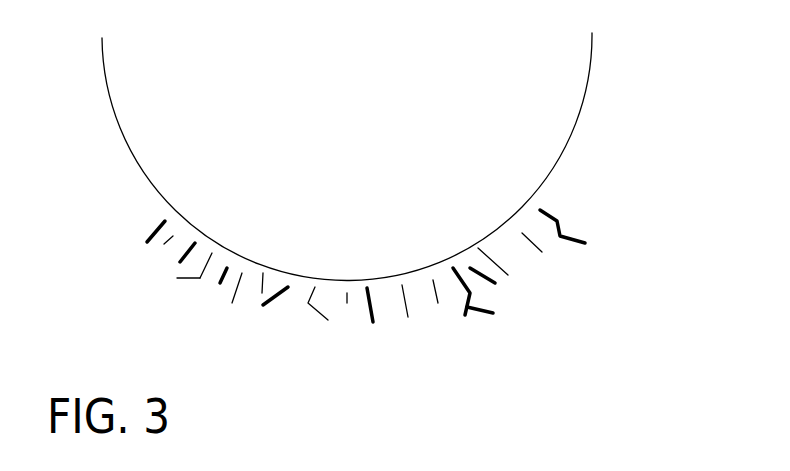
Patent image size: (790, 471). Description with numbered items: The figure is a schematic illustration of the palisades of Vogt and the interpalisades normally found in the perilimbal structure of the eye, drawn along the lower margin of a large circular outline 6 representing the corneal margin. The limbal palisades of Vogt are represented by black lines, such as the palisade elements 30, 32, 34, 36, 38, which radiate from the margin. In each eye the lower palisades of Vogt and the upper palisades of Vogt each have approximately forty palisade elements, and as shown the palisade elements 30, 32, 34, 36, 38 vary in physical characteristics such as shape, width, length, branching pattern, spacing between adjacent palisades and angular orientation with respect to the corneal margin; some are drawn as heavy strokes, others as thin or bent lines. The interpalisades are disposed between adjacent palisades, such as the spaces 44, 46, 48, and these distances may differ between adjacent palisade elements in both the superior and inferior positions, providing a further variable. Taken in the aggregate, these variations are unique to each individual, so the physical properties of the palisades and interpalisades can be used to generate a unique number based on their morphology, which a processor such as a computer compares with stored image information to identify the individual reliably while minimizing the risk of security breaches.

The wheel 6 is at (358, 113).
The palisade element 30 is at (150, 234).
The palisade element 32 is at (167, 242).
The palisade element 34 is at (193, 260).
The palisade element 36 is at (202, 278).
The palisade element 38 is at (228, 270).
The interpalisade space 44 is at (550, 237).
The interpalisade space 46 is at (510, 248).
The interpalisade space 48 is at (497, 277).